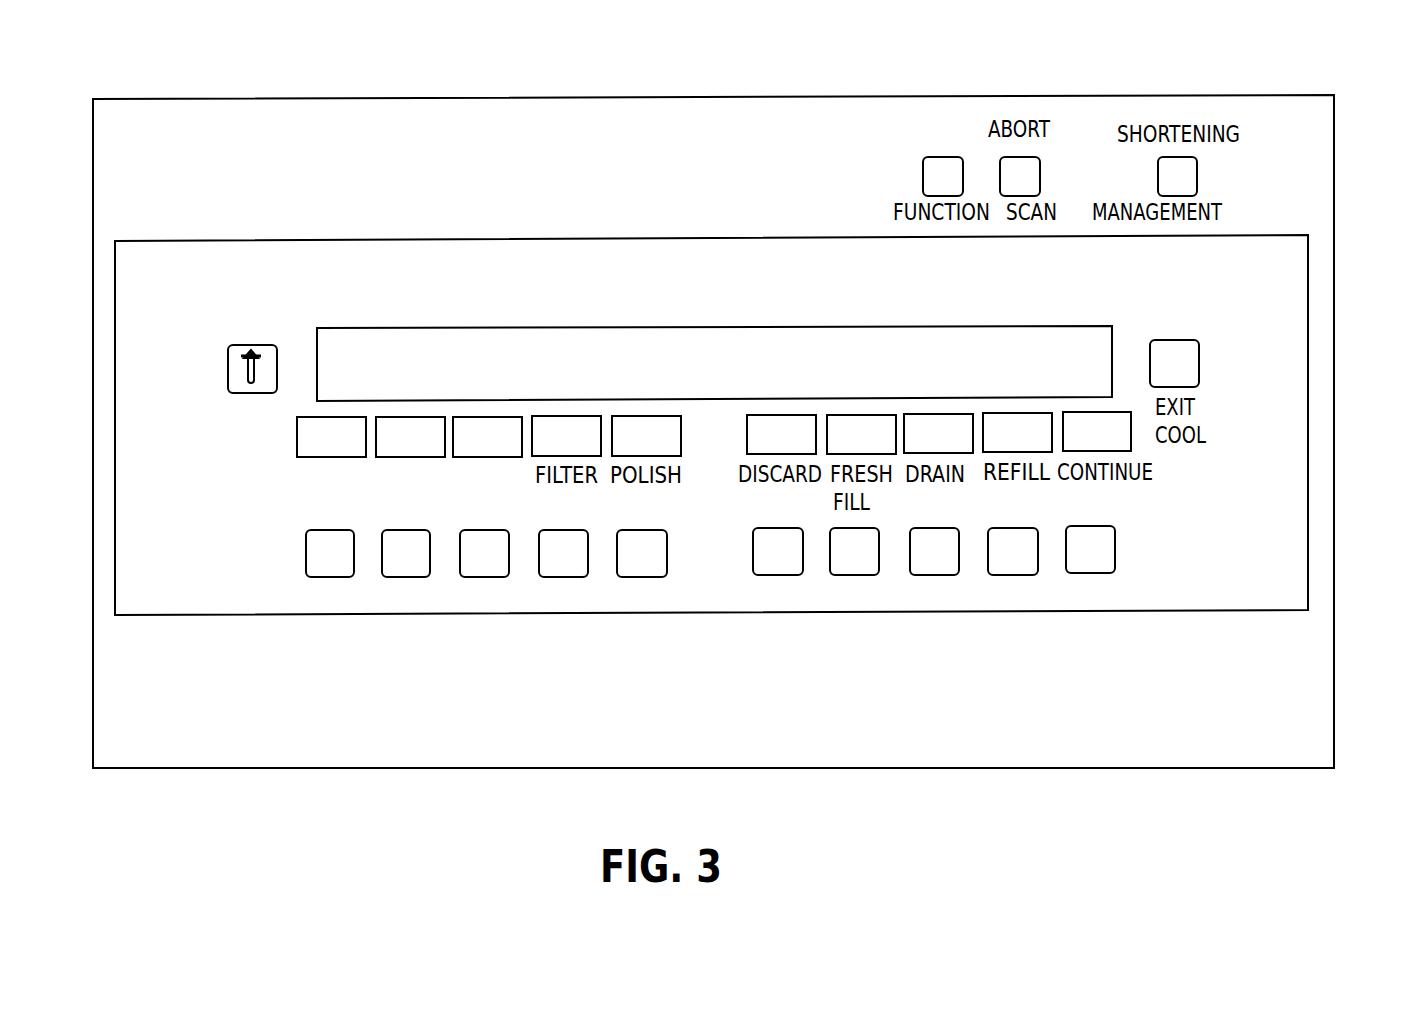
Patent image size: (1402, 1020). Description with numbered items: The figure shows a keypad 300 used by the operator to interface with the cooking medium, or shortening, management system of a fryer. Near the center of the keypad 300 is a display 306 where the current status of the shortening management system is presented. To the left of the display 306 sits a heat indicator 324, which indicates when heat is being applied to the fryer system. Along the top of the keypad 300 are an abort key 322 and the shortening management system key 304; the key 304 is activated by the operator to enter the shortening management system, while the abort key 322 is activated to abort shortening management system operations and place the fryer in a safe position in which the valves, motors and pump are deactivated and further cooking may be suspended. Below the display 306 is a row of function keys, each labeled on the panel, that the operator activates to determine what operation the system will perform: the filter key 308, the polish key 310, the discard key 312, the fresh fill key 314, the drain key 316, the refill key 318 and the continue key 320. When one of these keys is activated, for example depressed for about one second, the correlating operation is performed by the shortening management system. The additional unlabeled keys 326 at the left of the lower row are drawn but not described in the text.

The keypad 300 is at (222, 768).
The shortening management system key 304 is at (1197, 170).
The display 306 is at (602, 327).
The filter key 308 is at (563, 577).
The polish key 310 is at (630, 577).
The discard key 312 is at (779, 575).
The fresh fill key 314 is at (857, 575).
The drain key 316 is at (937, 575).
The refill key 318 is at (1015, 575).
The continue key 320 is at (1115, 553).
The abort key 322 is at (947, 157).
The heat indicator 324 is at (228, 362).
The vat selection buttons 326 is at (478, 577).